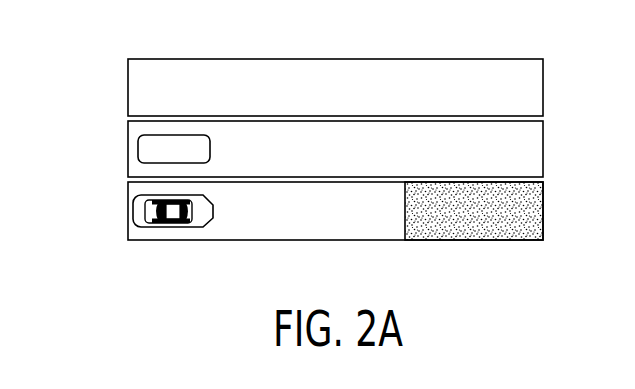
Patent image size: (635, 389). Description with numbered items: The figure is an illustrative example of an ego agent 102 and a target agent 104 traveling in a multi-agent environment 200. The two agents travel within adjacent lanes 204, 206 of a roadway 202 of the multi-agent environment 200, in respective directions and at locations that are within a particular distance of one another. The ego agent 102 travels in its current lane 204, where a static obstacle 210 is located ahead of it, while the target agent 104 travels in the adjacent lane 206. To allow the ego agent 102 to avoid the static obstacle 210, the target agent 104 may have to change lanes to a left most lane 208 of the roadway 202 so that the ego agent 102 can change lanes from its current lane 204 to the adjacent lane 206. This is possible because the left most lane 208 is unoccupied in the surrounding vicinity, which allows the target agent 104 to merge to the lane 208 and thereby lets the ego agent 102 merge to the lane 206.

The multi-agent environment 200 is at (341, 161).
The roadway 202 is at (341, 161).
The left most lane 208 is at (532, 82).
The adjacent lane 206 is at (341, 148).
The lane 204 is at (320, 237).
The static obstacle 210 is at (468, 223).
The target agent 104 is at (143, 150).
The ego agent 102 is at (148, 215).